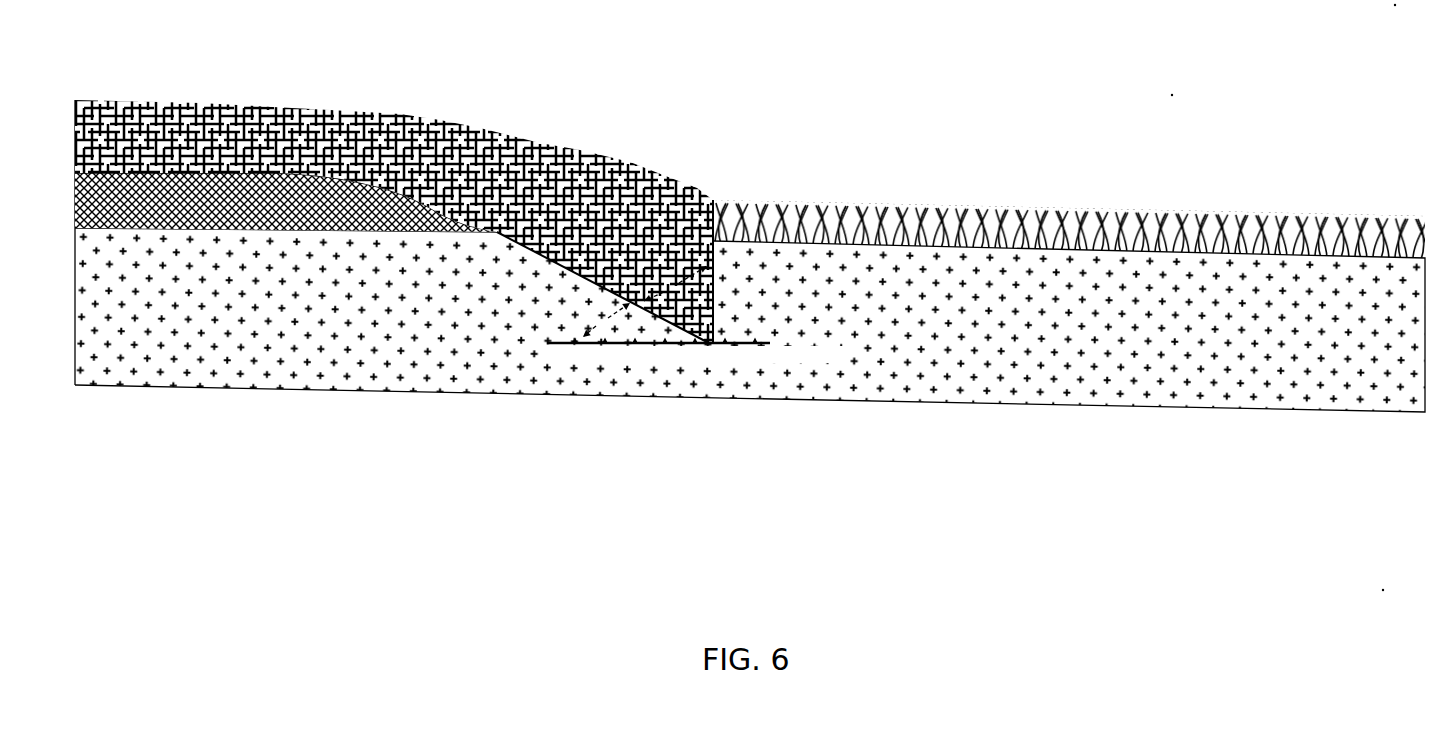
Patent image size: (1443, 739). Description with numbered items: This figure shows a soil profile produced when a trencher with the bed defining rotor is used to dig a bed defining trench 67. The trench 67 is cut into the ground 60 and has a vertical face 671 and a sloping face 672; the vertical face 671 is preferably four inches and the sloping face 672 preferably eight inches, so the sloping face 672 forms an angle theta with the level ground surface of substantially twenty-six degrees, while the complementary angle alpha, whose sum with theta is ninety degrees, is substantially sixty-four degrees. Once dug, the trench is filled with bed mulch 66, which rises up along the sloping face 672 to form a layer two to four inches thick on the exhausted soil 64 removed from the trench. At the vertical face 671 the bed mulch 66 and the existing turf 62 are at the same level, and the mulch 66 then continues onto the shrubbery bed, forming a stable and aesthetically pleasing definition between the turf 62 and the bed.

The substrate 60 is at (908, 412).
The existing turf 62 is at (962, 210).
The exhausted soil 64 is at (232, 233).
The bed mulch 66 is at (463, 115).
The bed defining trench 67 is at (633, 227).
The vertical face 671 is at (713, 288).
The sloping face 672 is at (557, 267).